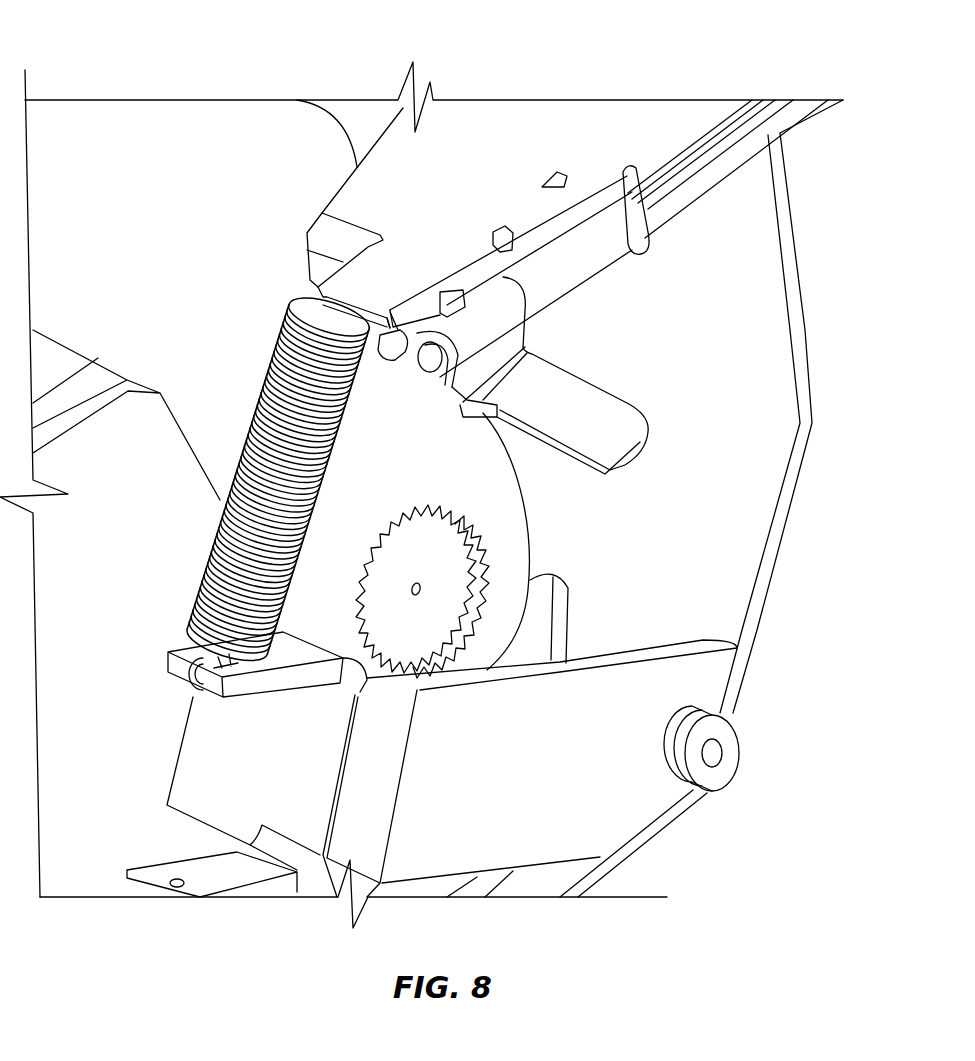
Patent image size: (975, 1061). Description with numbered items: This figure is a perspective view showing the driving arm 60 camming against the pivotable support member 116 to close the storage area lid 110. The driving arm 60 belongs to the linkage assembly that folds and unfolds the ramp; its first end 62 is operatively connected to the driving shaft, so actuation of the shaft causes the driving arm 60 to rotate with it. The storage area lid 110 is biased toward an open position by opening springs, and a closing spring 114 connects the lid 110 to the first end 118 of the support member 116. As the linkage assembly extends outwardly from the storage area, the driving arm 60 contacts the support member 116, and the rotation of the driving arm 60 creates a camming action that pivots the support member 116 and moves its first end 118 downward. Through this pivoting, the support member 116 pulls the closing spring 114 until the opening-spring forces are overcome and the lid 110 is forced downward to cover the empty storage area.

The driving arm 60 is at (223, 173).
The storage area lid 110 is at (578, 130).
The closing spring 114 is at (218, 510).
The first end of the driving arm 62 is at (512, 553).
The first end of the support member 118 is at (173, 672).
The pivotable support member 116 is at (615, 807).